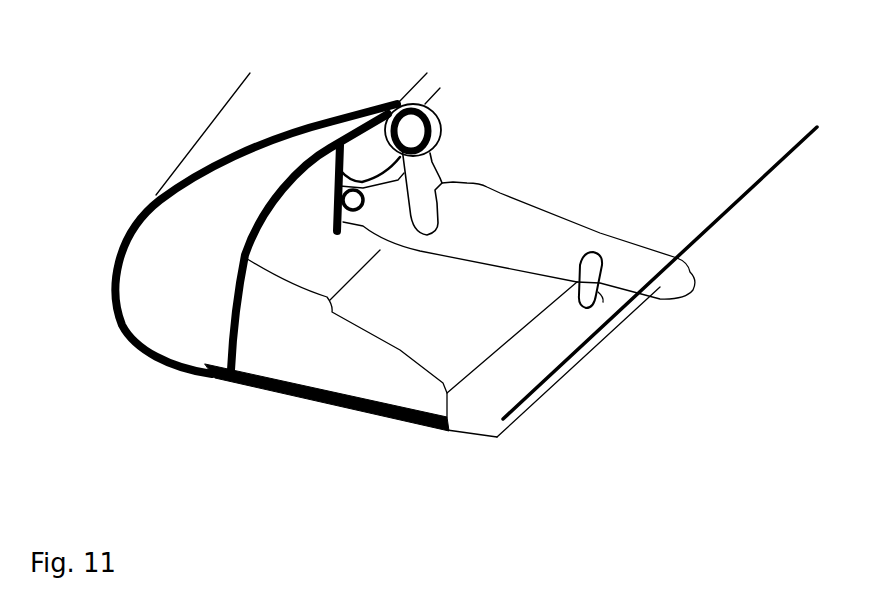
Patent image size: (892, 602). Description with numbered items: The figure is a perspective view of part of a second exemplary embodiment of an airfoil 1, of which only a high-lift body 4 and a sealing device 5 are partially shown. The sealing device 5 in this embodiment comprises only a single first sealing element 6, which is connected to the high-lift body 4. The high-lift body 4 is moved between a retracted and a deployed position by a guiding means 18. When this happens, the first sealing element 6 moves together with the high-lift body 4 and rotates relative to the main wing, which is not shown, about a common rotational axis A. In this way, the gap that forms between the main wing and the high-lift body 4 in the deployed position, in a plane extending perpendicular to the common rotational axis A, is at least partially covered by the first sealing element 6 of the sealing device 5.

The airfoil 1 is at (552, 142).
The high-lift body 4 is at (247, 127).
The sealing device 5 is at (250, 403).
The first sealing element 6 is at (347, 409).
The guiding means 18 is at (500, 243).
The common rotational axis A is at (723, 212).